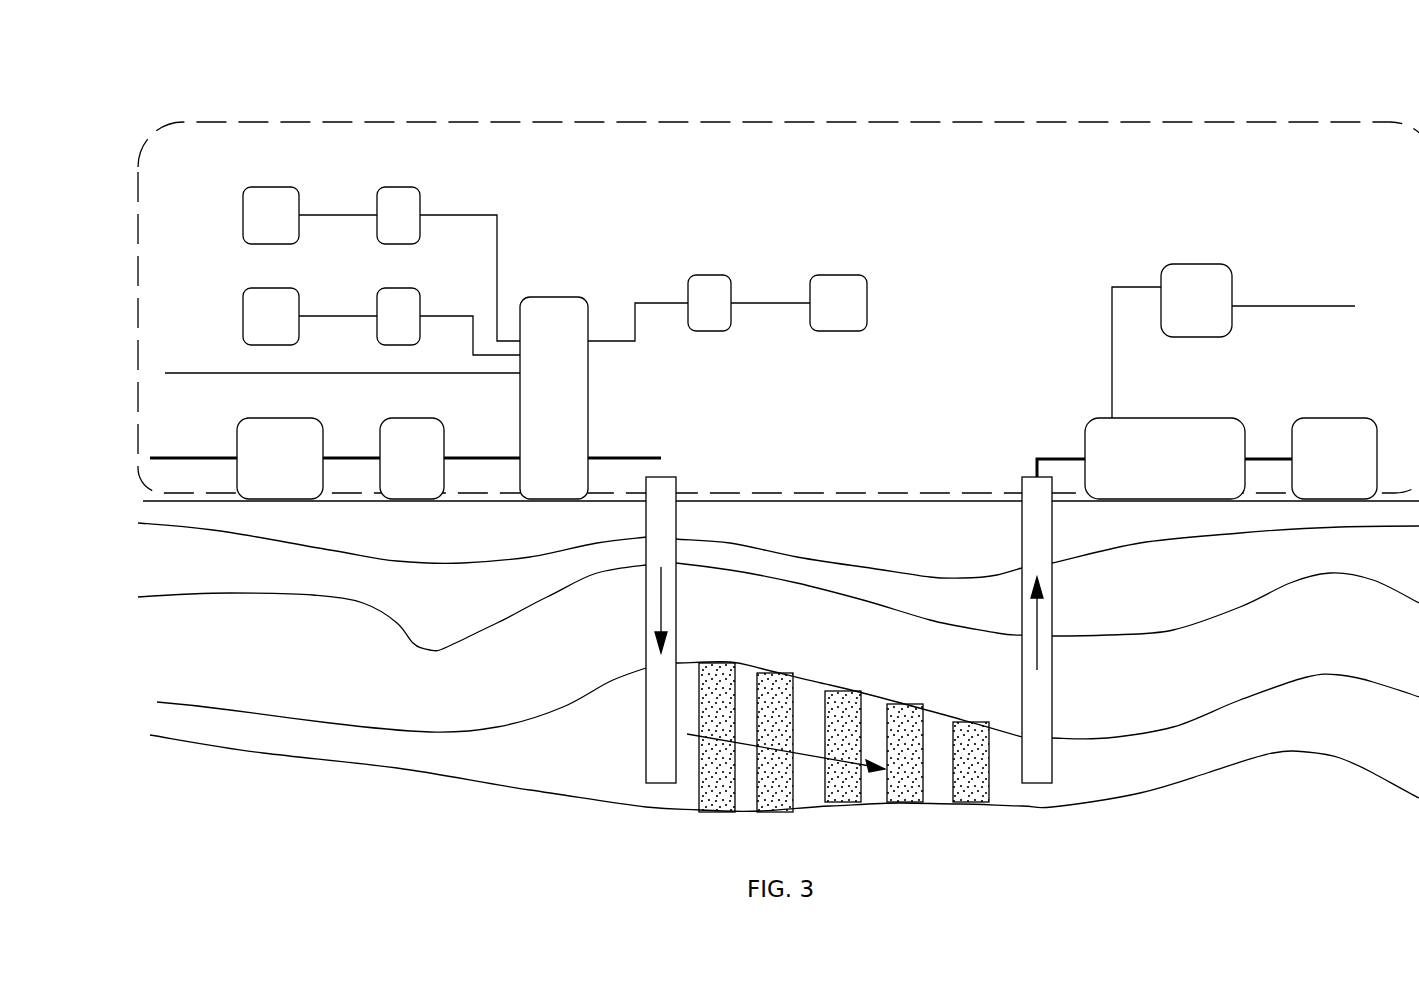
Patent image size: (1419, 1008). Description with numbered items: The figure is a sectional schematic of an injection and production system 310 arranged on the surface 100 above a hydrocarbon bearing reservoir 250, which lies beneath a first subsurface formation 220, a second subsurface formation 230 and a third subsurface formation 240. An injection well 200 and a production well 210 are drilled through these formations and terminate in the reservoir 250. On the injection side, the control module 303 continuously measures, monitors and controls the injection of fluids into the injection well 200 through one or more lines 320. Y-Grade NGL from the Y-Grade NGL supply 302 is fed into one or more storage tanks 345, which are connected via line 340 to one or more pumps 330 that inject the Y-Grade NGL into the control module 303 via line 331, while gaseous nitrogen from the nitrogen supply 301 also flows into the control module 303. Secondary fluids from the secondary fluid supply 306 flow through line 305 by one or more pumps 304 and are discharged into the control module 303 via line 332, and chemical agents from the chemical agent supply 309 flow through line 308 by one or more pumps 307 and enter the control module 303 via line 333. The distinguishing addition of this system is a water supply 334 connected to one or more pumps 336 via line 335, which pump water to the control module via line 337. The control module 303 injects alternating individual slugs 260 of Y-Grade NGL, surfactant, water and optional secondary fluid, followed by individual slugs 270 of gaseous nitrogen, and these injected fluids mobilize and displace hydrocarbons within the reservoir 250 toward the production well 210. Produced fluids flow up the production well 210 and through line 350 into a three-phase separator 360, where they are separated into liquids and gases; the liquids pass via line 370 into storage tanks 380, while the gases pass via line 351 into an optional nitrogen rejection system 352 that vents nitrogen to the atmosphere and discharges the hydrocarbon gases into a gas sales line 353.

The surface 100 is at (163, 497).
The injection well 200 is at (676, 517).
The production well 210 is at (1022, 540).
The first subsurface formation 220 is at (1147, 529).
The second subsurface formation 230 is at (1240, 572).
The third subsurface formation 240 is at (1312, 649).
The hydrocarbon bearing reservoir 250 is at (1306, 729).
The individual slugs 260 is at (722, 680).
The individual slugs of gaseous nitrogen 270 is at (818, 681).
The nitrogen supply 301 is at (180, 372).
The Y-Grade NGL supply 302 is at (165, 458).
The control module 303 is at (553, 297).
The pumps 304 is at (397, 288).
The line 305 is at (327, 316).
The secondary fluid supply 306 is at (272, 288).
The pumps 307 is at (398, 187).
The line 308 is at (332, 214).
The chemical agent supply 309 is at (272, 187).
The injection and production system 310 is at (316, 121).
The lines 320 is at (661, 477).
The pumps 330 is at (430, 418).
The line 331 is at (470, 458).
The line 332 is at (449, 316).
The line 333 is at (497, 215).
The water supply 334 is at (838, 275).
The line 335 is at (782, 303).
The pumps 336 is at (708, 275).
The line 337 is at (662, 303).
The line 340 is at (348, 458).
The storage tanks 345 is at (308, 418).
The line 350 is at (1060, 459).
The line 351 is at (1112, 298).
The nitrogen rejection system 352 is at (1168, 264).
The gas sales line 353 is at (1283, 306).
The three-phase separator 360 is at (1170, 418).
The line 370 is at (1265, 459).
The storage tanks 380 is at (1340, 418).